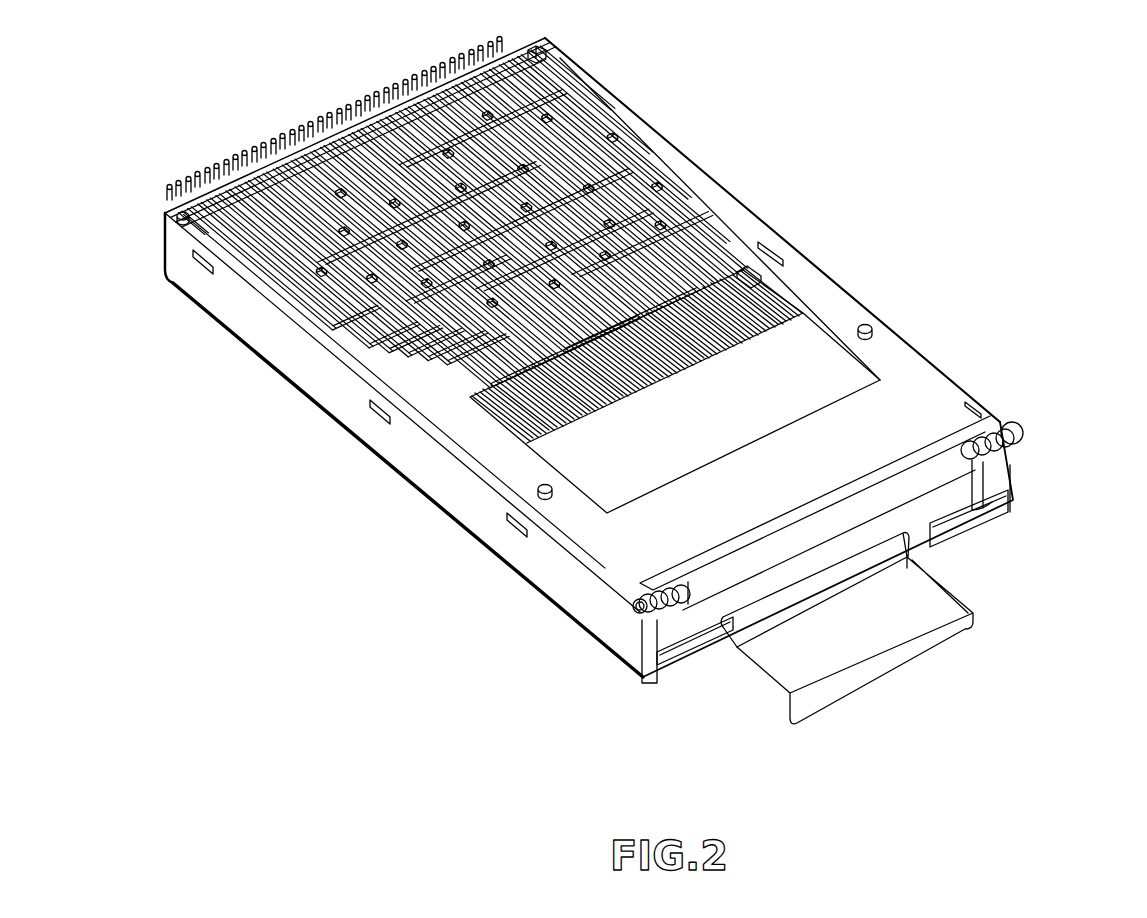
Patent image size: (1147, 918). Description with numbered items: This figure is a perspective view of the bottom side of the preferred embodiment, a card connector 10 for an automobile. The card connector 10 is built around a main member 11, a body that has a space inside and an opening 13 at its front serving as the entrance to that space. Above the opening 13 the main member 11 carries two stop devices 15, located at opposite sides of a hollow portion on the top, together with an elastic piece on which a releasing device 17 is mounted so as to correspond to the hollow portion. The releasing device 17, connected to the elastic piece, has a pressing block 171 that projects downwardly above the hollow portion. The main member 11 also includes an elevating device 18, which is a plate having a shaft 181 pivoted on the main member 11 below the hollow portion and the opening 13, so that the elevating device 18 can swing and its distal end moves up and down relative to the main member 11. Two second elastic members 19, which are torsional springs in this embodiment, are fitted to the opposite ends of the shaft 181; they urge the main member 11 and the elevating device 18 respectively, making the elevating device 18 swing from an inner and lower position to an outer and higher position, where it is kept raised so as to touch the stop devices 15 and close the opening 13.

The card connector 10 is at (295, 478).
The main member 11 is at (432, 510).
The opening 13 is at (998, 468).
The stop device 15 is at (693, 653).
The releasing device 17 is at (903, 673).
The pressing block 171 is at (857, 567).
The elevating device 18 is at (932, 492).
The shaft 181 is at (638, 622).
The second elastic member 19 is at (645, 604).